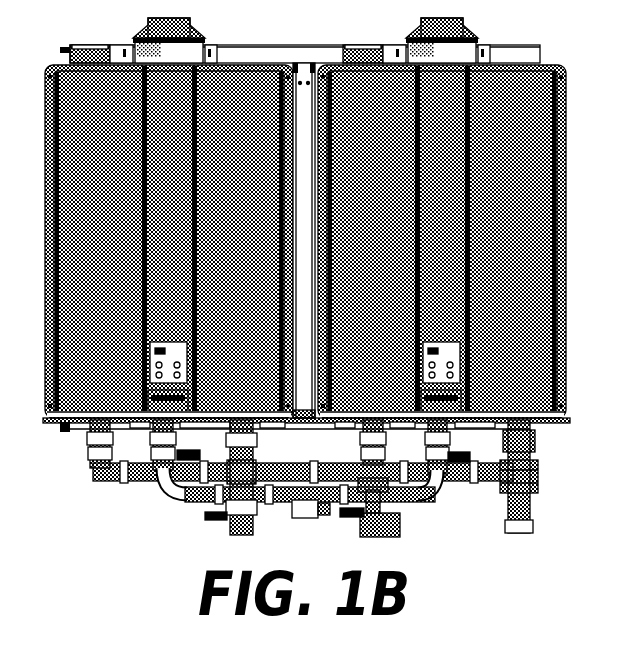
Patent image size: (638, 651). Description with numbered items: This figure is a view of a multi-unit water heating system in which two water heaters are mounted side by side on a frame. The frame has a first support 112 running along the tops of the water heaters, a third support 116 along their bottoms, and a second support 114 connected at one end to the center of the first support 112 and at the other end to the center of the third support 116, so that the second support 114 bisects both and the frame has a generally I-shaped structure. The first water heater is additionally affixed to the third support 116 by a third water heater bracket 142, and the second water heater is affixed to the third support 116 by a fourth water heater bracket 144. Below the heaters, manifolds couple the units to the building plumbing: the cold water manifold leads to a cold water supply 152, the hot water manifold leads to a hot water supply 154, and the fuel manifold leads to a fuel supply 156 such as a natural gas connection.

The first support 112 is at (247, 45).
The second support 114 is at (312, 113).
The third support 116 is at (280, 430).
The third water heater bracket 142 is at (130, 423).
The fourth water heater bracket 144 is at (482, 427).
The cold water supply 152 is at (307, 518).
The hot water supply 154 is at (225, 482).
The fuel supply 156 is at (397, 527).